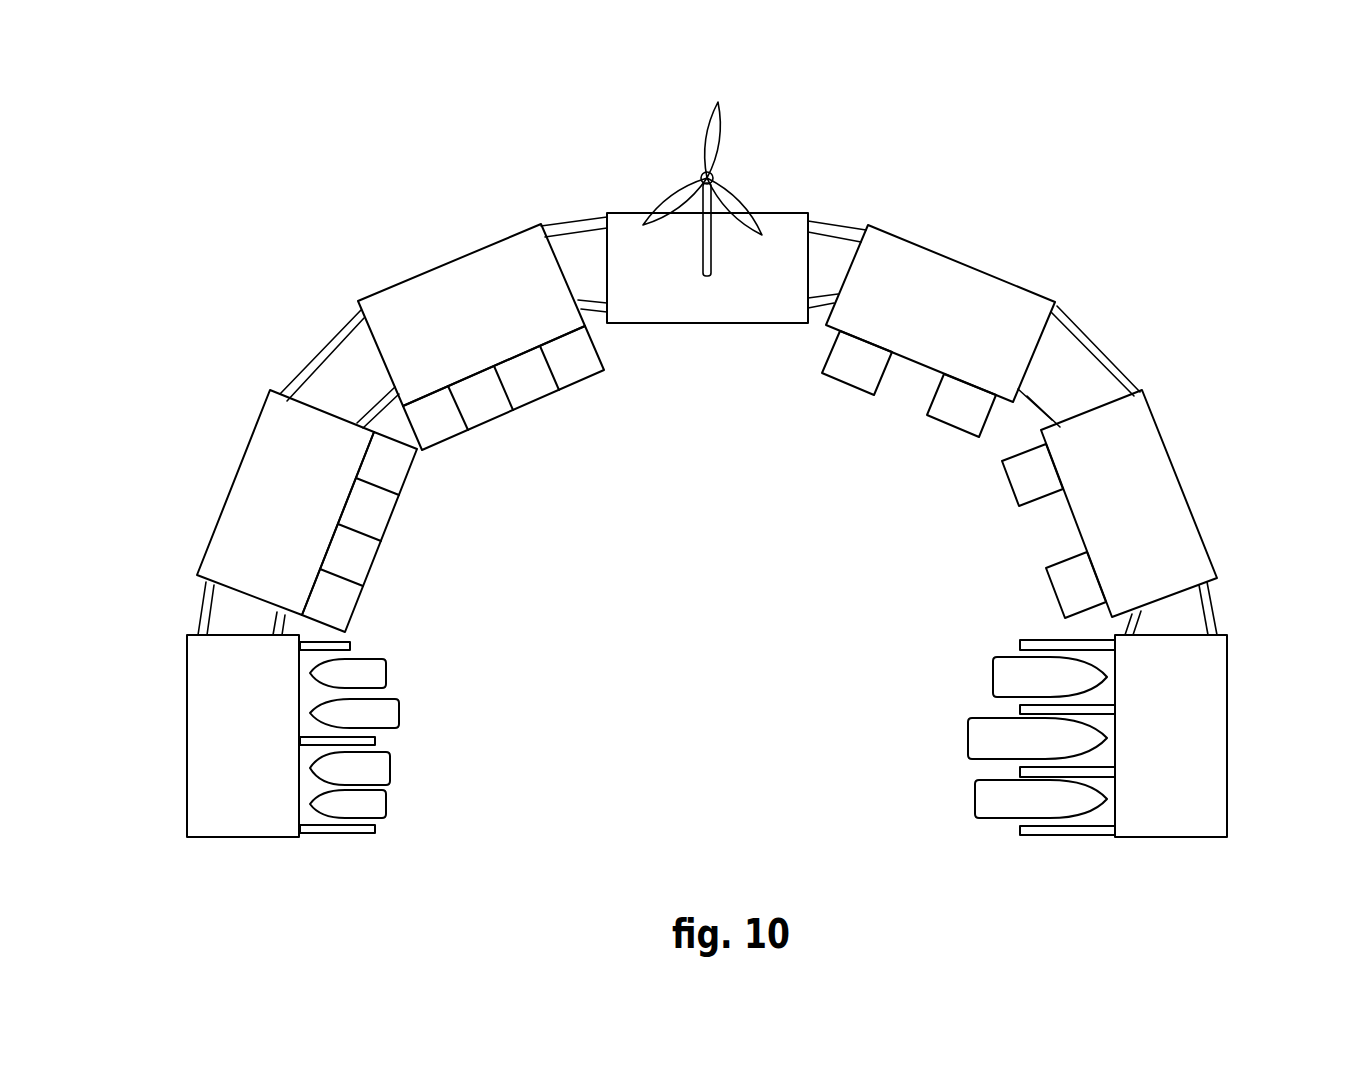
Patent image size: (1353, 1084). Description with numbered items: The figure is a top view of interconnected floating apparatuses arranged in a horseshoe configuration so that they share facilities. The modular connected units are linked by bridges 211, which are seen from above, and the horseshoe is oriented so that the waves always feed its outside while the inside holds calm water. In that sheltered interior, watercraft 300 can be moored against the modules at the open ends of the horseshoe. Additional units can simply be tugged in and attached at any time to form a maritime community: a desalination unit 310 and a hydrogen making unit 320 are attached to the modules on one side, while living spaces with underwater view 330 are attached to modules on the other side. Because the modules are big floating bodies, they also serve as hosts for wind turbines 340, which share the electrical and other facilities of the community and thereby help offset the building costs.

The bridges 211 is at (187, 723).
The watercraft 300 is at (983, 673).
The desalination unit 310 is at (898, 425).
The hydrogen making unit 320 is at (994, 531).
The living spaces with underwater view 330 is at (454, 448).
The wind turbines 340 is at (687, 160).